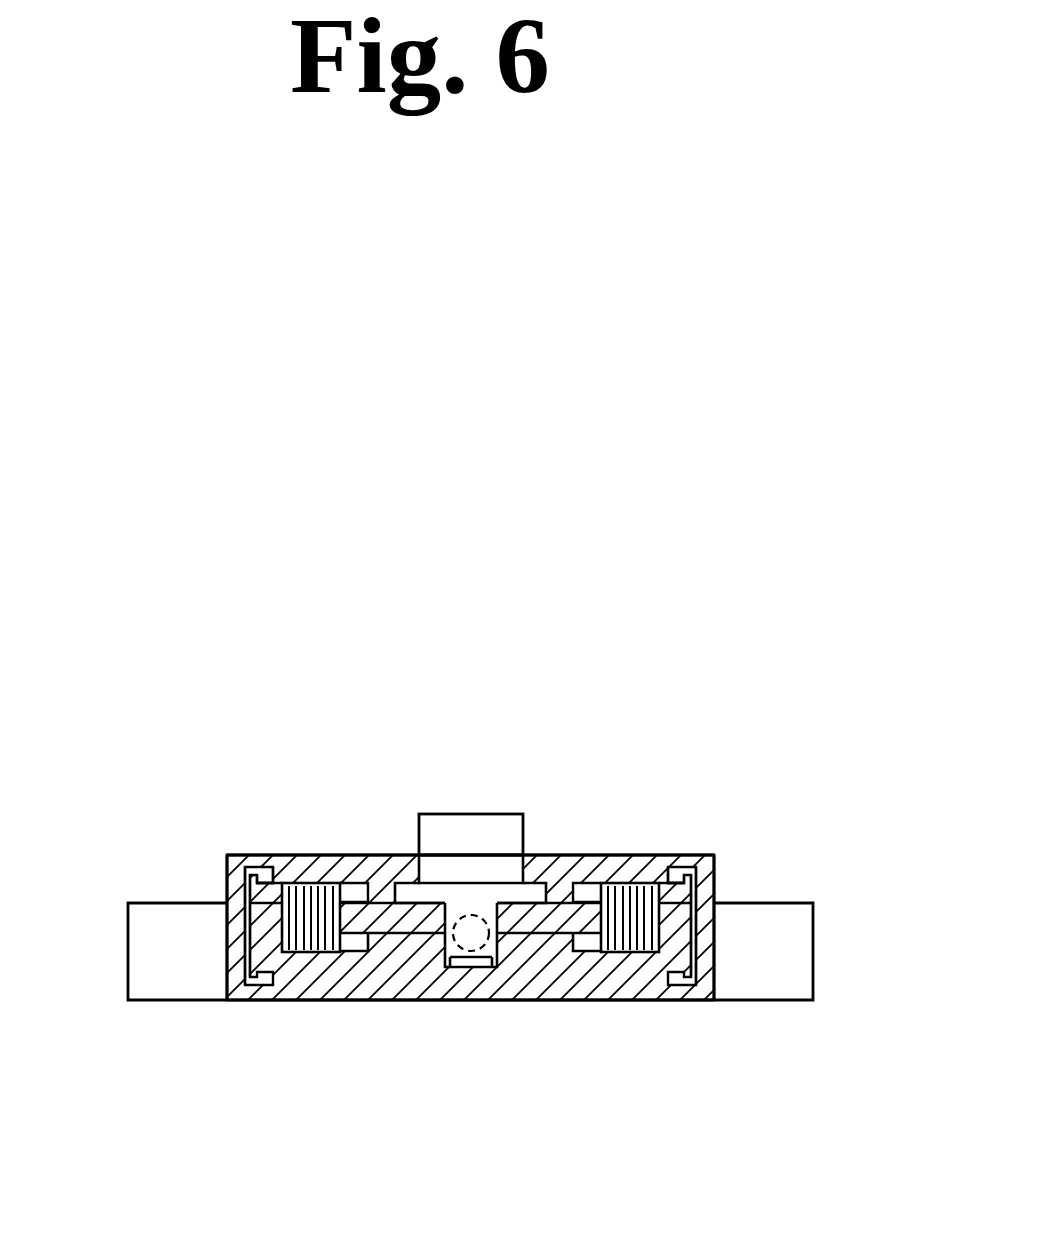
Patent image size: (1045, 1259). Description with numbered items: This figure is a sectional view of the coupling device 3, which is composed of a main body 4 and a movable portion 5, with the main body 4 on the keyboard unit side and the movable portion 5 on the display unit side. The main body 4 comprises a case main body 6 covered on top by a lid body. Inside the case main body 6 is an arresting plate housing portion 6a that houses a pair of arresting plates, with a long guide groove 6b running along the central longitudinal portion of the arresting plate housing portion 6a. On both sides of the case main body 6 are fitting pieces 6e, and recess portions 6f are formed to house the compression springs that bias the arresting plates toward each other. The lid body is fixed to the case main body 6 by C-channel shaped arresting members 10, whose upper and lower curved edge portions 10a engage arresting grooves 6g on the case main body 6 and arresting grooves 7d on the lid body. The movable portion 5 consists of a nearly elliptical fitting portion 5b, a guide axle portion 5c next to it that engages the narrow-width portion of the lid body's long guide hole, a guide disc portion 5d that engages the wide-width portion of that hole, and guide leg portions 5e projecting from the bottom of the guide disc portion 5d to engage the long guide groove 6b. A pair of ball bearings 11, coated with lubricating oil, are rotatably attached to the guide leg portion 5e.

The coupling device 3 is at (650, 835).
The main body 4 is at (533, 1022).
The movable portion 5 is at (474, 896).
The fitting portion 5b is at (433, 830).
The guide axle portion 5c is at (497, 873).
The guide disc portion 5d is at (408, 877).
The guide leg portion 5e is at (472, 963).
The case main body 6 is at (340, 1000).
The arresting plate housing portion 6a is at (565, 905).
The long guide groove 6b is at (437, 957).
The fitting piece 6e is at (128, 958).
The recess portion 6f is at (366, 880).
The arresting groove 6g is at (274, 877).
The arresting groove 7d is at (270, 984).
The arresting member 10 is at (228, 878).
The curved edge portion 10a is at (262, 868).
The ball bearing 11 is at (463, 950).